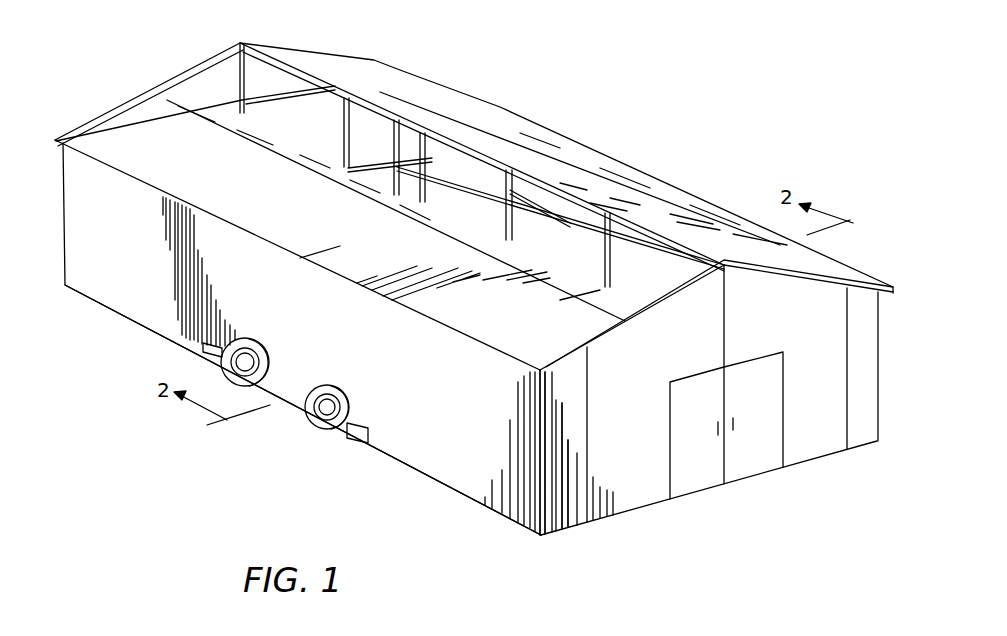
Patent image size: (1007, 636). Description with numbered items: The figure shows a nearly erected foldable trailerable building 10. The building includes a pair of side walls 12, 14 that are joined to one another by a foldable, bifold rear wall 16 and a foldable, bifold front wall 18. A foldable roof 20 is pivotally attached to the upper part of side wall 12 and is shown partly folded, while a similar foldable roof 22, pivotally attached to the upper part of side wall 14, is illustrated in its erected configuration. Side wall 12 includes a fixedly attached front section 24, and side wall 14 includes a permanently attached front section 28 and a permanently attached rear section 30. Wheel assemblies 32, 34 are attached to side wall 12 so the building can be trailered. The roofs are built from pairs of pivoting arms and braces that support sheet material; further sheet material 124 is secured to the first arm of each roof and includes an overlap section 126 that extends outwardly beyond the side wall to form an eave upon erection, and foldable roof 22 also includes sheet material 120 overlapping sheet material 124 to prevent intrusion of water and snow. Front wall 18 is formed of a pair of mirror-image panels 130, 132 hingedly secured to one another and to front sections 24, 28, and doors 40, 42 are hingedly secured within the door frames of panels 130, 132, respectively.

The foldable trailerable building 10 is at (290, 514).
The side wall 12 is at (421, 452).
The side wall 14 is at (568, 235).
The foldable rear wall 16 is at (265, 83).
The foldable front wall 18 is at (640, 488).
The foldable roof 20 is at (324, 232).
The foldable roof 22 is at (590, 163).
The front section 24 is at (572, 530).
The front section 28 is at (862, 437).
The rear section 30 is at (410, 177).
The wheel assembly 32 is at (335, 437).
The wheel assembly 34 is at (253, 393).
The door 40 is at (705, 484).
The door 42 is at (750, 469).
The sheet material 120 is at (312, 150).
The sheet material 124 is at (128, 133).
The overlap section 126 is at (115, 170).
The panel 130 is at (608, 508).
The panel 132 is at (813, 449).